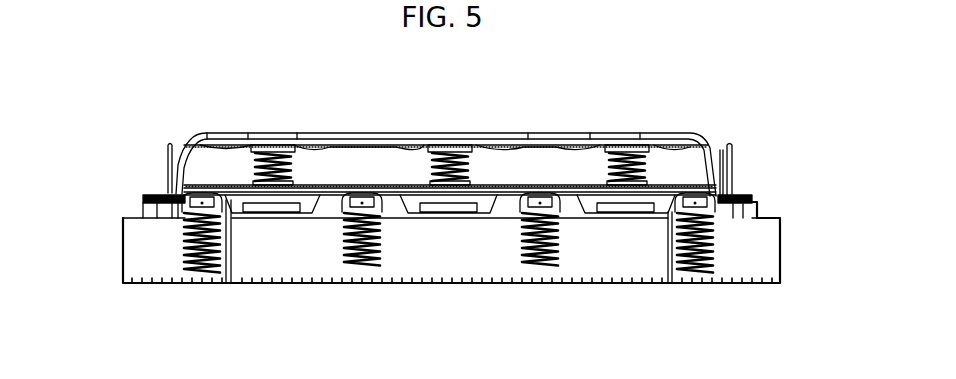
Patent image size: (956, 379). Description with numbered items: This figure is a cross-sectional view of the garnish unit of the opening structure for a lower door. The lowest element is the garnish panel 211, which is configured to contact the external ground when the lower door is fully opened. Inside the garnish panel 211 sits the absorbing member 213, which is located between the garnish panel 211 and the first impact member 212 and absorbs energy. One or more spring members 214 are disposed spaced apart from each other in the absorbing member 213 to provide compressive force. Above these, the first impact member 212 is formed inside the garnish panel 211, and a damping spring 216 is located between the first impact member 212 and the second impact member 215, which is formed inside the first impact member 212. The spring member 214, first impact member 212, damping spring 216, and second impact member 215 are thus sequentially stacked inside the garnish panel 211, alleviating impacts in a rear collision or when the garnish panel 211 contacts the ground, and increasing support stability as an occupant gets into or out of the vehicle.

The garnish panel 211 is at (152, 273).
The first impact member 212 is at (162, 183).
The absorbing member 213 is at (282, 252).
The spring member 214 is at (353, 285).
The second impact member 215 is at (212, 133).
The damping spring 216 is at (273, 152).